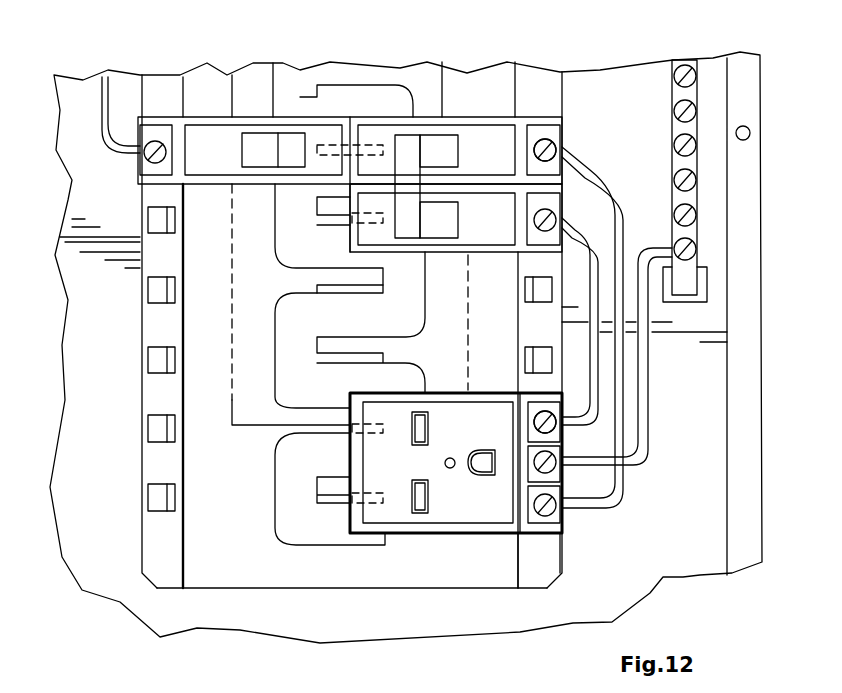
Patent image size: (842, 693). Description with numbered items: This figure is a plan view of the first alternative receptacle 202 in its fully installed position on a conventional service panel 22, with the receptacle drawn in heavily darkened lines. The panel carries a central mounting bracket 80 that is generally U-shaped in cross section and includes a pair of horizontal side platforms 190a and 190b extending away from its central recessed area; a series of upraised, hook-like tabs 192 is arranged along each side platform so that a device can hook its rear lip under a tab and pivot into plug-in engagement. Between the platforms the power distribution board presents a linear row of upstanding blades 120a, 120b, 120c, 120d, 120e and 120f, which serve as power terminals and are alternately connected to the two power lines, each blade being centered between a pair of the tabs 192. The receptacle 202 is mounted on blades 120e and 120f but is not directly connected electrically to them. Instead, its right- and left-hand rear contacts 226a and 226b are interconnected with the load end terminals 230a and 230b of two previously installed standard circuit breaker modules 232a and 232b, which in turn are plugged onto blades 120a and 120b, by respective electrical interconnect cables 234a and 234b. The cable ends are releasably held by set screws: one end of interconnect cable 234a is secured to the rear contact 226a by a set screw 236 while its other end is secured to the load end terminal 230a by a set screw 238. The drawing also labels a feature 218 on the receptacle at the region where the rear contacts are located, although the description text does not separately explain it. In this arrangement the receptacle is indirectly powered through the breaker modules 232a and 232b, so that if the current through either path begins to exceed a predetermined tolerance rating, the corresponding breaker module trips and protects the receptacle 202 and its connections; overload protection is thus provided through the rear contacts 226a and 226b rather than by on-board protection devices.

The service panel 22 is at (84, 62).
The mounting bracket 80 is at (333, 589).
The upstanding blade 120a is at (368, 148).
The upstanding blade 120b is at (317, 217).
The upstanding blade 120c is at (317, 285).
The upstanding blade 120d is at (317, 353).
The upstanding blade 120e is at (317, 433).
The upstanding blade 120f is at (317, 502).
The horizontal side platform 190a is at (155, 545).
The horizontal side platform 190b is at (542, 565).
The upraised tabs 192 is at (150, 288).
The first alternative receptacle 202 is at (445, 545).
The receptacle terminal screws 218 is at (563, 512).
The right-hand rear contact 226a is at (565, 432).
The left-hand rear contact 226b is at (563, 517).
The load end terminal 230a is at (548, 130).
The load end terminal 230b is at (553, 202).
The circuit breaker module 232a is at (453, 117).
The circuit breaker module 232b is at (488, 257).
The interconnect cable 234a is at (620, 398).
The interconnect cable 234b is at (565, 472).
The set screw 236 is at (530, 422).
The set screw 238 is at (558, 150).